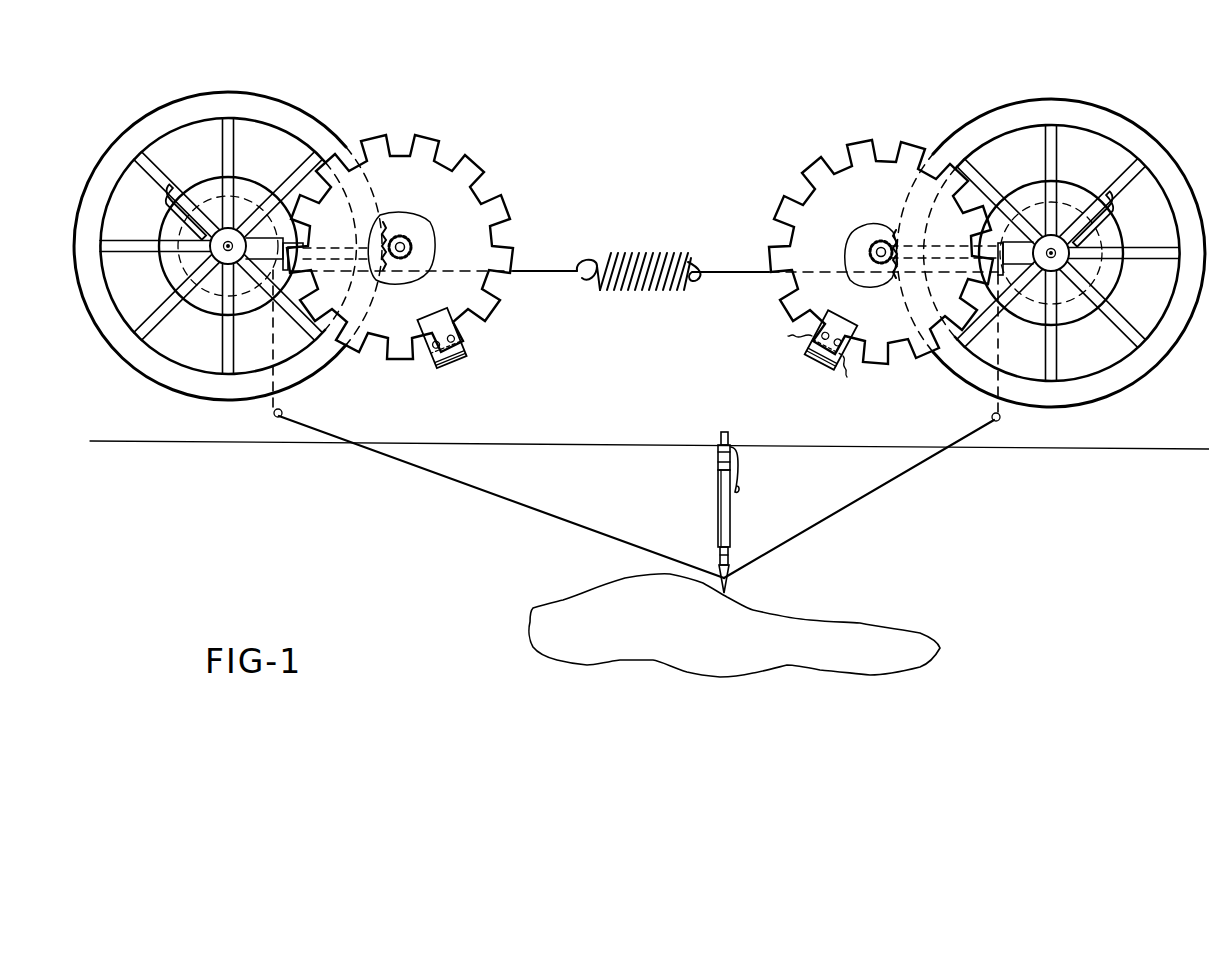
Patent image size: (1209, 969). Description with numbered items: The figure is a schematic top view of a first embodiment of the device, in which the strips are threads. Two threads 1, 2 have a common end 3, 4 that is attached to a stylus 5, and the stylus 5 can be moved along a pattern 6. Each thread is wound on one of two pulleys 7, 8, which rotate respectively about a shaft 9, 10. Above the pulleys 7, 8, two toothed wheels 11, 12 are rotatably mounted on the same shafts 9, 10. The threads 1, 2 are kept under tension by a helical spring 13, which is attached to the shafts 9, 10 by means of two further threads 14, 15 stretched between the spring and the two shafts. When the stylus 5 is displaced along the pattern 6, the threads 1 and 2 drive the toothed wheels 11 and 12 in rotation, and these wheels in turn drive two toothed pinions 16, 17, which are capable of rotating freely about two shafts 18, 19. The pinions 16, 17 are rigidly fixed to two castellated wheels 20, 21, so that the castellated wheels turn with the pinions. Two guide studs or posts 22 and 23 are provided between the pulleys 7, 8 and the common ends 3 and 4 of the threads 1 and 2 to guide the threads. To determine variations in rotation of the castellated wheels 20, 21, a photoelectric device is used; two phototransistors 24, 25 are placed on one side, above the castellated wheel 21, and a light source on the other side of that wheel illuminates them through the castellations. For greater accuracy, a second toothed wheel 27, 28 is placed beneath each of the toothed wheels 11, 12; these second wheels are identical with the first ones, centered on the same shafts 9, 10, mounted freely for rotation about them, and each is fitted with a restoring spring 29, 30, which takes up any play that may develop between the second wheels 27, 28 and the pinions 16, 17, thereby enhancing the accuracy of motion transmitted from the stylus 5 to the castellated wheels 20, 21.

The thread 1 is at (882, 488).
The thread 2 is at (485, 493).
The common end 3 is at (732, 578).
The common end 4 is at (717, 580).
The stylus 5 is at (719, 503).
The pattern 6 is at (943, 647).
The pulley 7 is at (1070, 310).
The pulley 8 is at (207, 310).
The shaft 9 is at (1057, 257).
The shaft 10 is at (222, 250).
The toothed wheel 11 is at (970, 133).
The toothed wheel 12 is at (297, 123).
The helical spring 13 is at (637, 291).
The thread 14 is at (735, 273).
The thread 15 is at (551, 273).
The toothed pinion 16 is at (860, 243).
The toothed pinion 17 is at (412, 243).
The shaft 18 is at (880, 243).
The shaft 19 is at (398, 240).
The castellated wheel 20 is at (810, 170).
The castellated wheel 21 is at (470, 162).
The guide stud 22 is at (990, 418).
The guide stud 23 is at (283, 413).
The phototransistor 24 is at (462, 338).
The phototransistor 25 is at (436, 358).
The second toothed wheel 27 is at (1113, 357).
The second toothed wheel 28 is at (153, 337).
The restoring spring 29 is at (1113, 196).
The restoring spring 30 is at (166, 190).